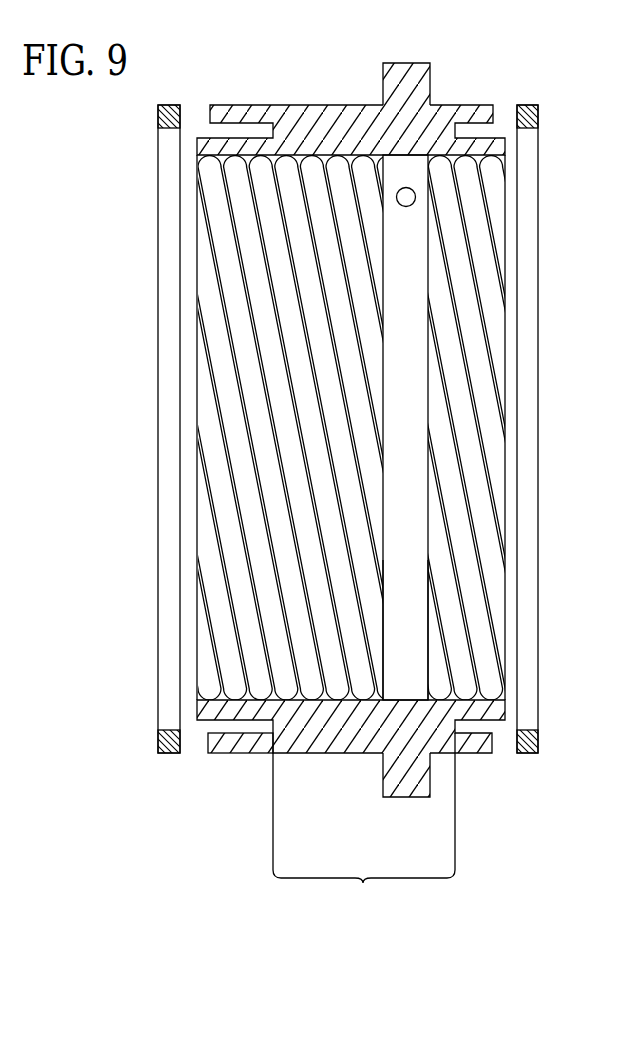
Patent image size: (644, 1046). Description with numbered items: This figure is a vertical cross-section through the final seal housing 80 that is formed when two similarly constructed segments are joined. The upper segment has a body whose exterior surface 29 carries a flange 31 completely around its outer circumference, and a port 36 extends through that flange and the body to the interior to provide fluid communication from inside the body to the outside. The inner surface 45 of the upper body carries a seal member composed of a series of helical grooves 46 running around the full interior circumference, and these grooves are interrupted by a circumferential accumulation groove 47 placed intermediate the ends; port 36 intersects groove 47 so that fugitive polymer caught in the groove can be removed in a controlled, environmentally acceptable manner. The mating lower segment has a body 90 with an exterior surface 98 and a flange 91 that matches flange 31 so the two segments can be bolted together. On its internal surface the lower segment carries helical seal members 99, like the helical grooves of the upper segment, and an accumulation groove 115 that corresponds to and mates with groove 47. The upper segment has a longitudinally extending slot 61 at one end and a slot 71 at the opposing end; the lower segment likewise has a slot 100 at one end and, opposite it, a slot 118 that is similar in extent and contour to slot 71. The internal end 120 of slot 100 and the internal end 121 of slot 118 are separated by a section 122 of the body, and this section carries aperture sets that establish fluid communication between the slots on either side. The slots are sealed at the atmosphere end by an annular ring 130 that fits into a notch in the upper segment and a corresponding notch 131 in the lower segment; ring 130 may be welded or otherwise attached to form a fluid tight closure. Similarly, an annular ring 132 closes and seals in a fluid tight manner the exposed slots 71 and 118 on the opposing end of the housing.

The exterior surface 29 is at (283, 103).
The flange 31 is at (430, 90).
The port 36 is at (418, 197).
The inner surface 45 is at (287, 158).
The helical grooves 46 is at (243, 320).
The accumulation groove 47 is at (407, 275).
The slot 61 is at (215, 131).
The slot 71 is at (467, 131).
The final seal housing 80 is at (337, 543).
The body 90 is at (323, 737).
The flange 91 is at (382, 777).
The exterior surface 98 is at (247, 746).
The helical seal members 99 is at (307, 613).
The slot 100 is at (232, 727).
The accumulation groove 115 is at (407, 628).
The slot 118 is at (487, 727).
The internal end 120 is at (268, 727).
The internal end 121 is at (468, 733).
The section 122 is at (364, 822).
The annular ring 130 is at (158, 740).
The notch 131 is at (195, 733).
The annular ring 132 is at (540, 745).